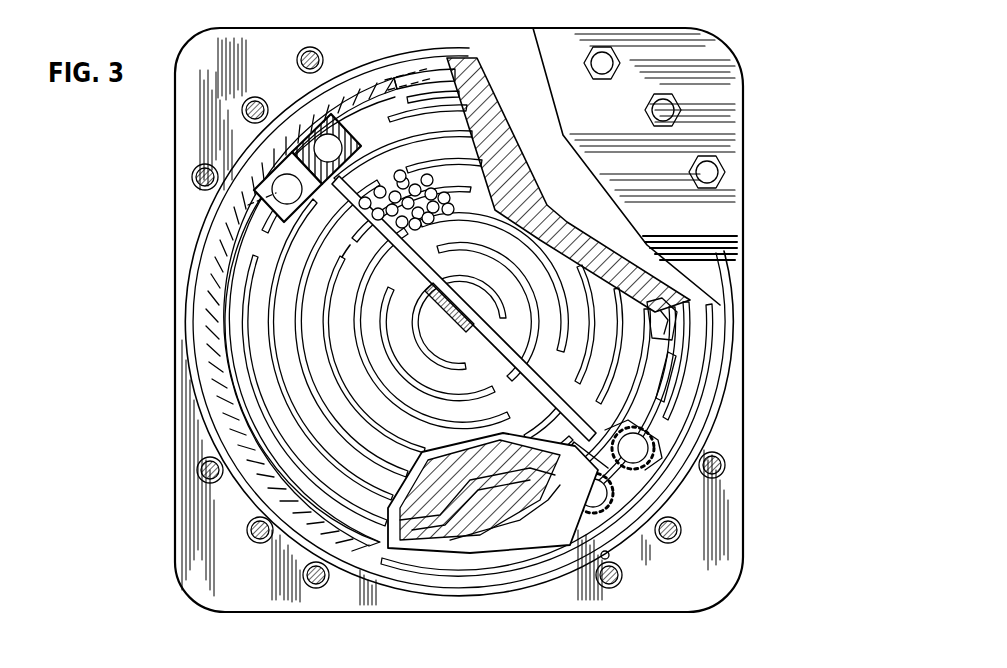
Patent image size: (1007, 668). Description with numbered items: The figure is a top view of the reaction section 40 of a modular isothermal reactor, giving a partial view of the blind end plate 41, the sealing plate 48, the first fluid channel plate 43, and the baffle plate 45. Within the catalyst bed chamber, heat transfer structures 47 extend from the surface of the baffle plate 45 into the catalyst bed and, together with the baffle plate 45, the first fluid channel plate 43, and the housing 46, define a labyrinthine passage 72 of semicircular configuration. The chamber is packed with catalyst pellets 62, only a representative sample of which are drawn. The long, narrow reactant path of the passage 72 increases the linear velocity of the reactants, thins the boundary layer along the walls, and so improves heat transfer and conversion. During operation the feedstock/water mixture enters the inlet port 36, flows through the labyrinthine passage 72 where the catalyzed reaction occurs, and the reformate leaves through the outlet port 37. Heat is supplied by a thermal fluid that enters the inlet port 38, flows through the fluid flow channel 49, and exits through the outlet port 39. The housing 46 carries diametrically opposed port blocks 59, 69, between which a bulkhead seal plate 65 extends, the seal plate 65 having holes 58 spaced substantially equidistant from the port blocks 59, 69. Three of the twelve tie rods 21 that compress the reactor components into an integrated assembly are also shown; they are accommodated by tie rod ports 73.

The tie rods 21 is at (712, 168).
The inlet port 36 is at (385, 95).
The outlet port 37 is at (262, 206).
The inlet port 38 is at (650, 447).
The outlet port 39 is at (584, 508).
The reaction section 40 is at (735, 608).
The blind end plate 41 is at (718, 237).
The first fluid channel plate 43 is at (718, 328).
The baffle plate 45 is at (656, 402).
The housing 46 is at (226, 408).
The heat transfer structures 47 is at (668, 368).
The sealing plate 48 is at (710, 282).
The fluid flow channel 49 is at (462, 550).
The holes 58 is at (445, 288).
The port block 59 is at (275, 180).
The catalyst pellets 62 is at (408, 178).
The bulkhead seal plate 65 is at (342, 257).
The port block 69 is at (607, 560).
The labyrinthine passage 72 is at (258, 352).
The tie rod ports 73 is at (194, 170).